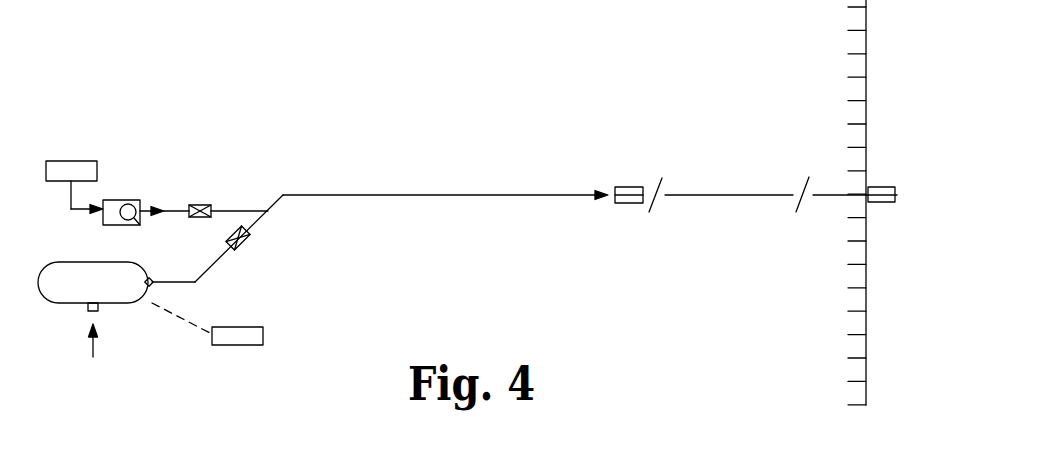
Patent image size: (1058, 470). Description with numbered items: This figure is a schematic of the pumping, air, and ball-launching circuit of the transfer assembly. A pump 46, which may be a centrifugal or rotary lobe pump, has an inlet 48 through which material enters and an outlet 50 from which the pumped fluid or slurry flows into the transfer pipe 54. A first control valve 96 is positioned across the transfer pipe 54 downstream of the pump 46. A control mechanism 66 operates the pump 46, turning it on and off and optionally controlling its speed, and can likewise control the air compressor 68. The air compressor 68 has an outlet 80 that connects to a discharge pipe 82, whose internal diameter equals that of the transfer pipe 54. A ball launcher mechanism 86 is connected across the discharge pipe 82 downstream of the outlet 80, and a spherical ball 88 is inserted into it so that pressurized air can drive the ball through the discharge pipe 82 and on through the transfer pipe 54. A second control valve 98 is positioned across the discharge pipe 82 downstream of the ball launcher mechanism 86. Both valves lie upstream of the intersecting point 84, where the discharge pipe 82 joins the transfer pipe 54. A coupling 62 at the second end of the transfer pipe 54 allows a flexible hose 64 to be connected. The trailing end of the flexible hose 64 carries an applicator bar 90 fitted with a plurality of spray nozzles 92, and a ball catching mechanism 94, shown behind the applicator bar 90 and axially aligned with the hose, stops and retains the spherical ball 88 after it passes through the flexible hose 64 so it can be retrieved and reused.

The pump 46 is at (100, 262).
The inlet 48 is at (98, 311).
The outlet 50 is at (152, 279).
The transfer pipe 54 is at (491, 194).
The coupling 62 is at (630, 187).
The flexible hose 64 is at (704, 194).
The control mechanism 66 is at (247, 327).
The air compressor 68 is at (76, 160).
The outlet 80 is at (66, 182).
The discharge pipe 82 is at (71, 209).
The intersecting point 84 is at (275, 204).
The ball launcher mechanism 86 is at (127, 200).
The spherical ball 88 is at (140, 225).
The applicator bar 90 is at (857, 202).
The spray nozzles 92 is at (848, 54).
The ball catching mechanism 94 is at (886, 187).
The first control valve 96 is at (249, 246).
The second control valve 98 is at (205, 204).